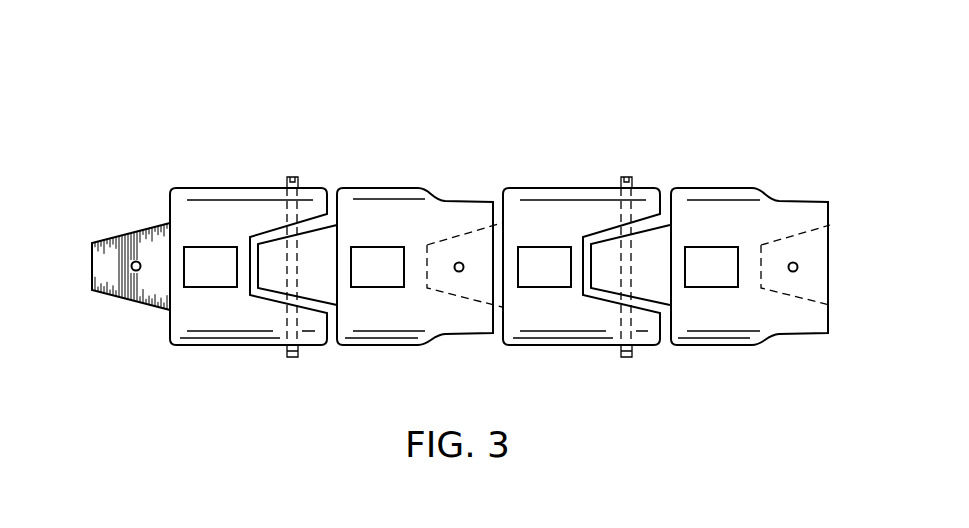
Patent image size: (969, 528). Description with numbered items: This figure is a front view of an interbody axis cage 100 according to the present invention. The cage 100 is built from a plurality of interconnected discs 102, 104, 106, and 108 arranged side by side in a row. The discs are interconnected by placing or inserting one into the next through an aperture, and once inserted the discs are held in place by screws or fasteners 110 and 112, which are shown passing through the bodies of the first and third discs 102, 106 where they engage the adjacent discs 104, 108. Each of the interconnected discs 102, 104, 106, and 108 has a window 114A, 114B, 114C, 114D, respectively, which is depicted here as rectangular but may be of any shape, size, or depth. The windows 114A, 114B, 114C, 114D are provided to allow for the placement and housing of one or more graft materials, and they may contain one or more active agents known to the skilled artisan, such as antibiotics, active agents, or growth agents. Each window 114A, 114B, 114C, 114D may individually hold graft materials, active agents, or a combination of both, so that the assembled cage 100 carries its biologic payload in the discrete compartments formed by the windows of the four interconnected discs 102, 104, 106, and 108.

The interbody axis cage 100 is at (398, 62).
The disc 102 is at (190, 184).
The disc 104 is at (390, 184).
The disc 106 is at (555, 184).
The disc 108 is at (729, 184).
The screw/fastener 110 is at (287, 181).
The screw/fastener 112 is at (632, 180).
The window 114A is at (214, 278).
The window 114B is at (380, 277).
The window 114C is at (544, 278).
The window 114D is at (710, 278).